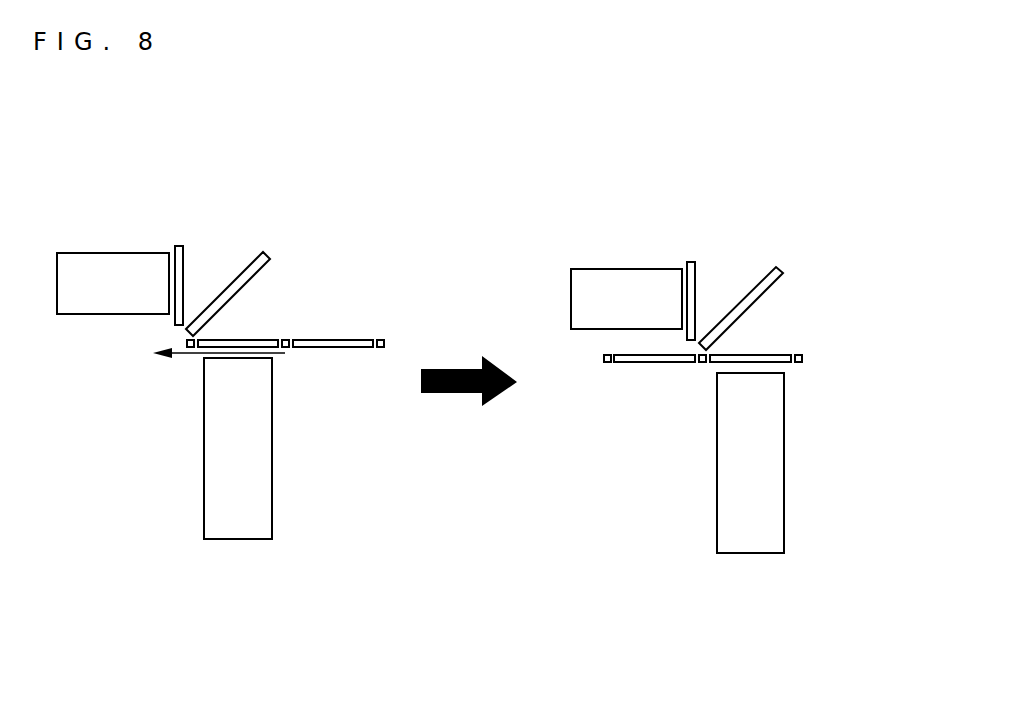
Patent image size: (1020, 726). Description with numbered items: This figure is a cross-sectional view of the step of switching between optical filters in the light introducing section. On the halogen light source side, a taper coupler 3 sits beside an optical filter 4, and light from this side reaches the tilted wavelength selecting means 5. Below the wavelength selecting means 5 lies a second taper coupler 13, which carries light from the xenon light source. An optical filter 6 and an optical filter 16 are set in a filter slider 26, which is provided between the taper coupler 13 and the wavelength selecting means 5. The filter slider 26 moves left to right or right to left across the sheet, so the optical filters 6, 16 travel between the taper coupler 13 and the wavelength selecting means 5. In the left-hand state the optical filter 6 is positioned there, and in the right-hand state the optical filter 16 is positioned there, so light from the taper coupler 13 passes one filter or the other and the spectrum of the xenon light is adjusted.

The taper coupler 3 is at (111, 263).
The optical filter 4 is at (176, 246).
The wavelength selecting means 5 is at (267, 255).
The optical filter 6 is at (260, 340).
The taper coupler 13 is at (265, 448).
The optical filter 16 is at (330, 340).
The filter slider 26 is at (380, 340).